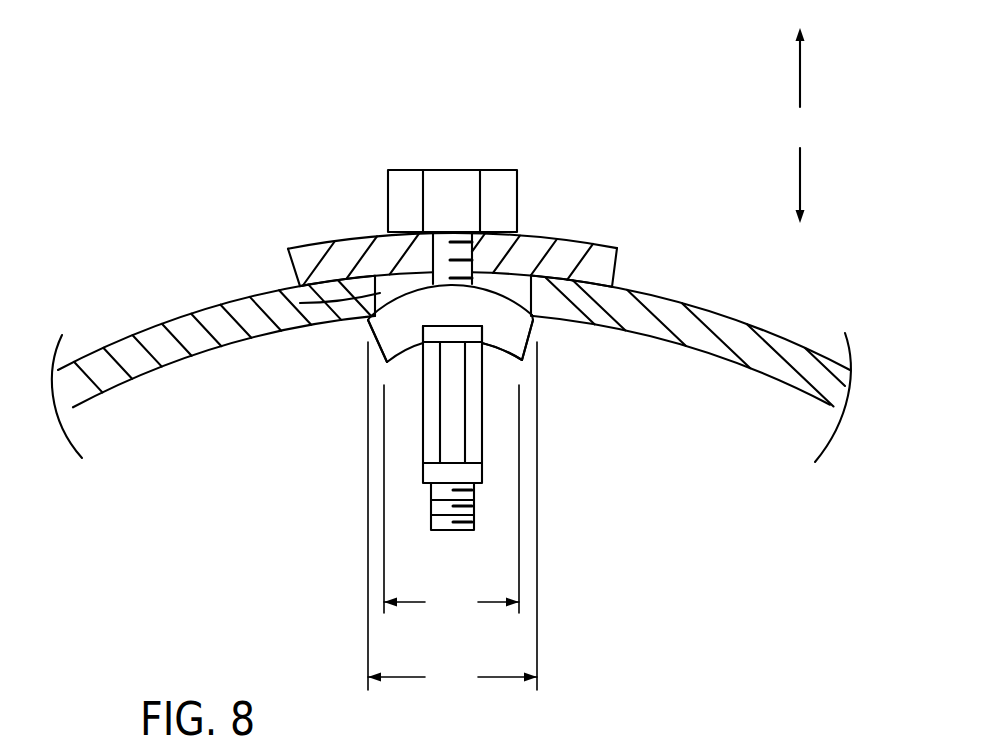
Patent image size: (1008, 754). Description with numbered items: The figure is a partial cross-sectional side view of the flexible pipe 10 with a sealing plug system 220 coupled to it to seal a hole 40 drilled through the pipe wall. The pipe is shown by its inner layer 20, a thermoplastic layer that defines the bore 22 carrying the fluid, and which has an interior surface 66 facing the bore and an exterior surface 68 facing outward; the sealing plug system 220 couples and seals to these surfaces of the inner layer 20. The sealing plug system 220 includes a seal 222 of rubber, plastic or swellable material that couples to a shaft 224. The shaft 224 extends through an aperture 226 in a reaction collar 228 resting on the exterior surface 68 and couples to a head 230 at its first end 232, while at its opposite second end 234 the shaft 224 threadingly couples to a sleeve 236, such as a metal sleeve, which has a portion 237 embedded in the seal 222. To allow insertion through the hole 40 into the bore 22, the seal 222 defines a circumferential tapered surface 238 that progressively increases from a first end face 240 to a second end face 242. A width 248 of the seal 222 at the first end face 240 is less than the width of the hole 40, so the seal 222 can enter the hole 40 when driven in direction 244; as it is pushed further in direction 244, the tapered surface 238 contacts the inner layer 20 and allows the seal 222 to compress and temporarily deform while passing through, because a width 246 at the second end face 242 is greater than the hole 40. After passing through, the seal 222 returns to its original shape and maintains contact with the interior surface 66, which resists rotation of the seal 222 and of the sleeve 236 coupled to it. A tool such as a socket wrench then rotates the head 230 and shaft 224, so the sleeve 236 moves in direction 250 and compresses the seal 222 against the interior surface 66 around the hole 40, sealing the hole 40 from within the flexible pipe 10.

The flexible pipe 10 is at (733, 487).
The inner layer 20 is at (123, 358).
The bore 22 is at (738, 622).
The hole 40 is at (300, 303).
The interior surface 66 is at (763, 372).
The exterior surface 68 is at (815, 352).
The sealing plug system 220 is at (567, 122).
The seal 222 is at (370, 448).
The shaft 224 is at (415, 538).
The aperture 226 is at (480, 262).
The reaction collar 228 is at (598, 262).
The head 230 is at (395, 202).
The first end 232 is at (500, 135).
The second end 234 is at (478, 542).
The sleeve 236 is at (458, 423).
The portion 237 is at (438, 333).
The tapered surface 238 is at (523, 325).
The first end face 240 is at (482, 343).
The second end face 242 is at (413, 296).
The direction 244 is at (800, 180).
The width 246 is at (452, 517).
The width 248 is at (451, 501).
The direction 250 is at (800, 75).